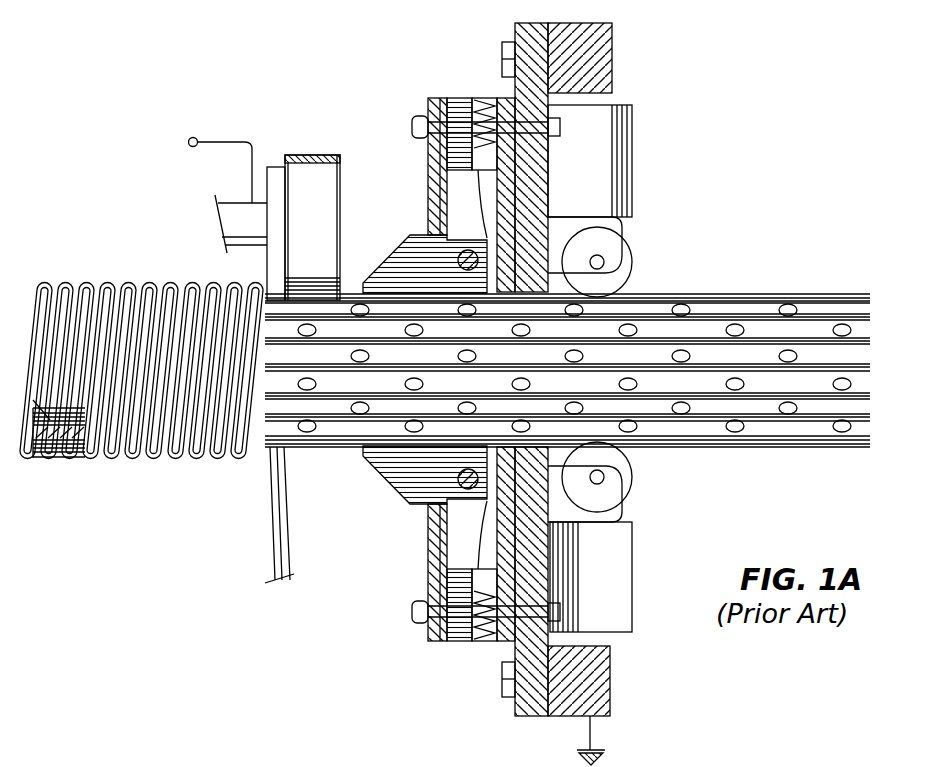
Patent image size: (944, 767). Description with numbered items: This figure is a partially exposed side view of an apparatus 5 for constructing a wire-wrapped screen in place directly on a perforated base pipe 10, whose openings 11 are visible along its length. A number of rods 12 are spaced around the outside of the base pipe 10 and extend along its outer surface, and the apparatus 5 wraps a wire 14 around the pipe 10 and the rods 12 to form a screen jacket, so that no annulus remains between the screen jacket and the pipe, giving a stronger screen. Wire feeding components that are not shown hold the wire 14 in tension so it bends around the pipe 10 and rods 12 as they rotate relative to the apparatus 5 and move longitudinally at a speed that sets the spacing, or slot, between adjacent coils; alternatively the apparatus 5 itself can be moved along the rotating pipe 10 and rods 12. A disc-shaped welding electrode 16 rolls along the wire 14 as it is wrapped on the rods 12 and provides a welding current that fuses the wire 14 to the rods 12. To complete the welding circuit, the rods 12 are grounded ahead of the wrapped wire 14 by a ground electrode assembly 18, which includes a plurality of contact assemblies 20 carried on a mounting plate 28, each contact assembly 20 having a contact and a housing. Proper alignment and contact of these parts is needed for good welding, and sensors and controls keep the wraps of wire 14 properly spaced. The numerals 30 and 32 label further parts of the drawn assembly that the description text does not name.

The apparatus 5 is at (714, 103).
The base pipe 10 is at (818, 432).
The perforations 11 is at (845, 326).
The rods 12 is at (755, 315).
The wire 14 is at (152, 462).
The welding electrode 16 is at (312, 155).
The ground electrode assembly 18 is at (398, 111).
The contact assembly 20 is at (440, 170).
The mounting plate 28 is at (515, 90).
The bolt 30 is at (482, 625).
The pivot pin 32 is at (463, 487).